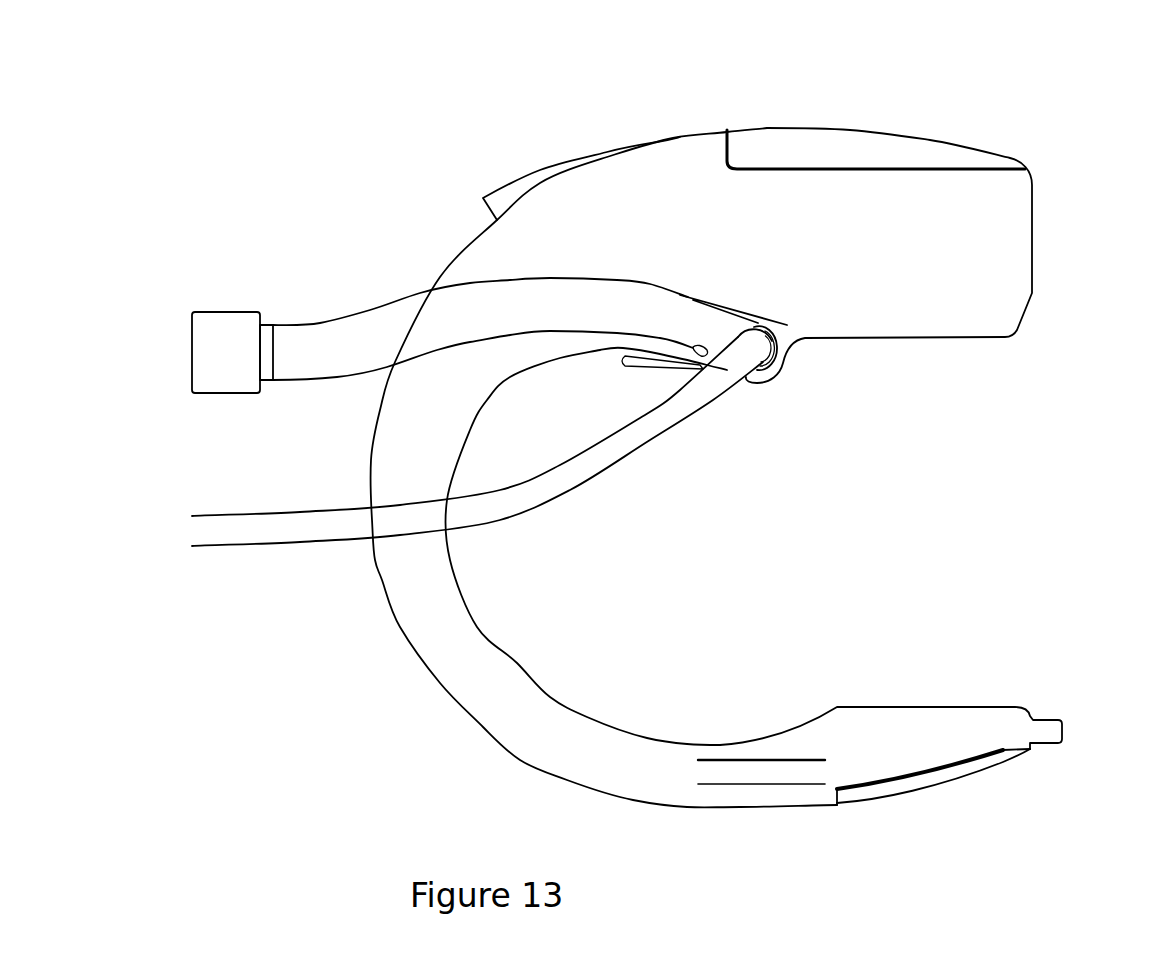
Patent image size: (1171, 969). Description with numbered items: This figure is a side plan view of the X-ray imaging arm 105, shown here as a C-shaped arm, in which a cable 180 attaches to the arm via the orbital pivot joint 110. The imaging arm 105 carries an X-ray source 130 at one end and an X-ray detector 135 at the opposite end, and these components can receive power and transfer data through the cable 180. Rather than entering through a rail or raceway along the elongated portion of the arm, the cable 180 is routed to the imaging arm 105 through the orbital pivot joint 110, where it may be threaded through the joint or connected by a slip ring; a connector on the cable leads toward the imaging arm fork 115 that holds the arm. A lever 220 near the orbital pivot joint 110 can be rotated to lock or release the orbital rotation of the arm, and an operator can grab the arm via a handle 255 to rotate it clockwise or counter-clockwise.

The X-ray imaging arm 105 is at (923, 120).
The orbital pivot joint 110 is at (771, 385).
The X-ray imaging arm fork 115 is at (350, 304).
The X-ray source 130 is at (955, 353).
The X-ray detector 135 is at (977, 690).
The cable 180 is at (305, 548).
The lever 220 is at (650, 367).
The handle 255 is at (760, 789).